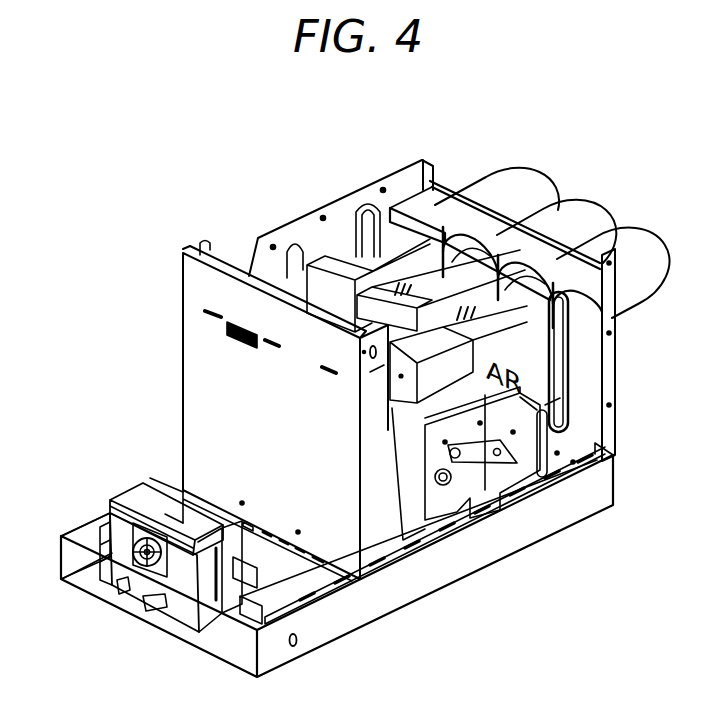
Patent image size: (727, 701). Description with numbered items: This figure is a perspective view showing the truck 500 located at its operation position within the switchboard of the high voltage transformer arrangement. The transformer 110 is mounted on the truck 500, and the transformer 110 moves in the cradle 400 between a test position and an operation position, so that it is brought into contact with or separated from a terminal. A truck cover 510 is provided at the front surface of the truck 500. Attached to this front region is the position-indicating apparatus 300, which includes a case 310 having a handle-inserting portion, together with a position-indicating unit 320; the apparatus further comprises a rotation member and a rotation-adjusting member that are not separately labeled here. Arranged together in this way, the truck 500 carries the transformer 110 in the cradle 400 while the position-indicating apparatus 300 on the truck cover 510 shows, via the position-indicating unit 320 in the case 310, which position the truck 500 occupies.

The transformer 110 is at (407, 507).
The position-indicating apparatus 300 is at (141, 540).
The case 310 is at (147, 493).
The position-indicating unit 320 is at (135, 535).
The cradle 400 is at (347, 203).
The truck 500 is at (330, 567).
The truck cover 510 is at (187, 342).